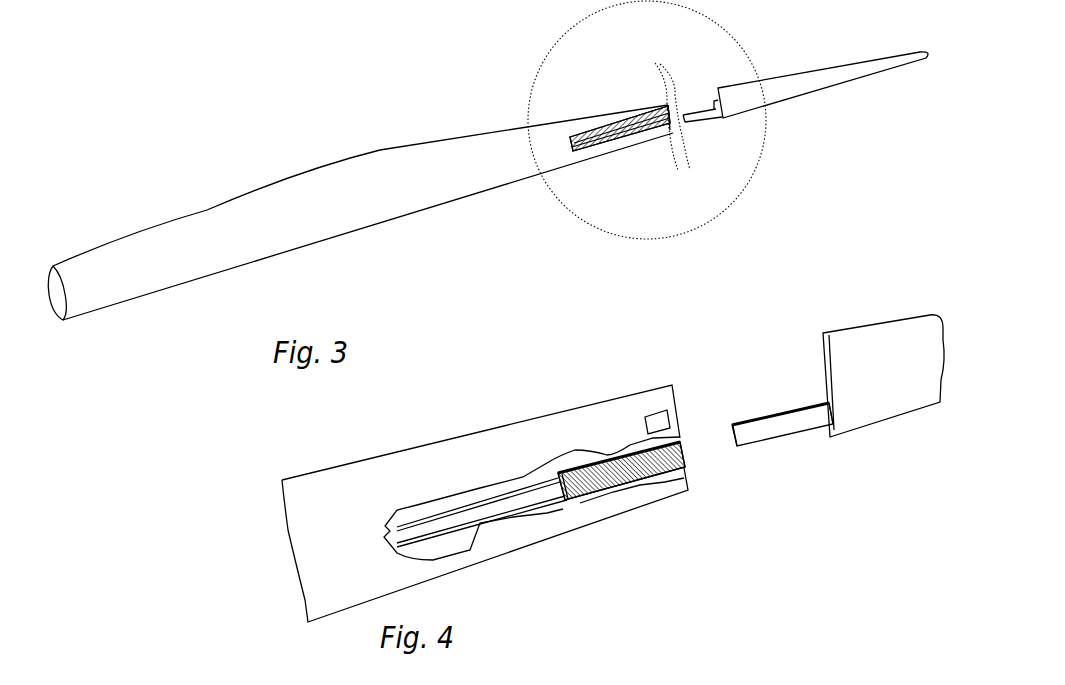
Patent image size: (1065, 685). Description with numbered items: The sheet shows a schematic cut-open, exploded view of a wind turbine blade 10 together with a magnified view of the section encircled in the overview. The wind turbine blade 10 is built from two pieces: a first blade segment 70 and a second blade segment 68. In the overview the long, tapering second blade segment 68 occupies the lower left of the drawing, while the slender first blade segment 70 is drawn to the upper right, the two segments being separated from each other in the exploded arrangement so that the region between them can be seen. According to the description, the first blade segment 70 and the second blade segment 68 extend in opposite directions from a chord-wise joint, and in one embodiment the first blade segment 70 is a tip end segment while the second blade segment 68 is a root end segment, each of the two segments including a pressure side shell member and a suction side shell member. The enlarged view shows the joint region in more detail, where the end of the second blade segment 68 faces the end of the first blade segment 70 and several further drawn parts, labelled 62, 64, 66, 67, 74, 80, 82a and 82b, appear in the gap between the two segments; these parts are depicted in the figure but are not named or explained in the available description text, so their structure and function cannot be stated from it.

In FIG. 3, the wind turbine blade 10 is at (322, 112).
In FIG. 3, the connector assembly 62 is at (705, 140).
In FIG. 4, the connector assembly 62 is at (773, 485).
In FIG. 3, the sheath 64 is at (620, 128).
In FIG. 4, the sheath 64 is at (625, 475).
In FIG. 4, the contact strip 66 is at (685, 455).
In FIG. 4, the connector body 67 is at (795, 420).
In FIG. 3, the second blade segment 68 is at (672, 150).
In FIG. 4, the second blade segment 68 is at (385, 470).
In FIG. 3, the first blade segment 70 is at (828, 75).
In FIG. 4, the first blade segment 70 is at (882, 325).
In FIG. 4, the shaft end face 74 is at (811, 388).
In FIG. 4, the aperture 80 is at (645, 420).
In FIG. 4, the first rail 82a is at (490, 500).
In FIG. 4, the second rail 82b is at (513, 517).